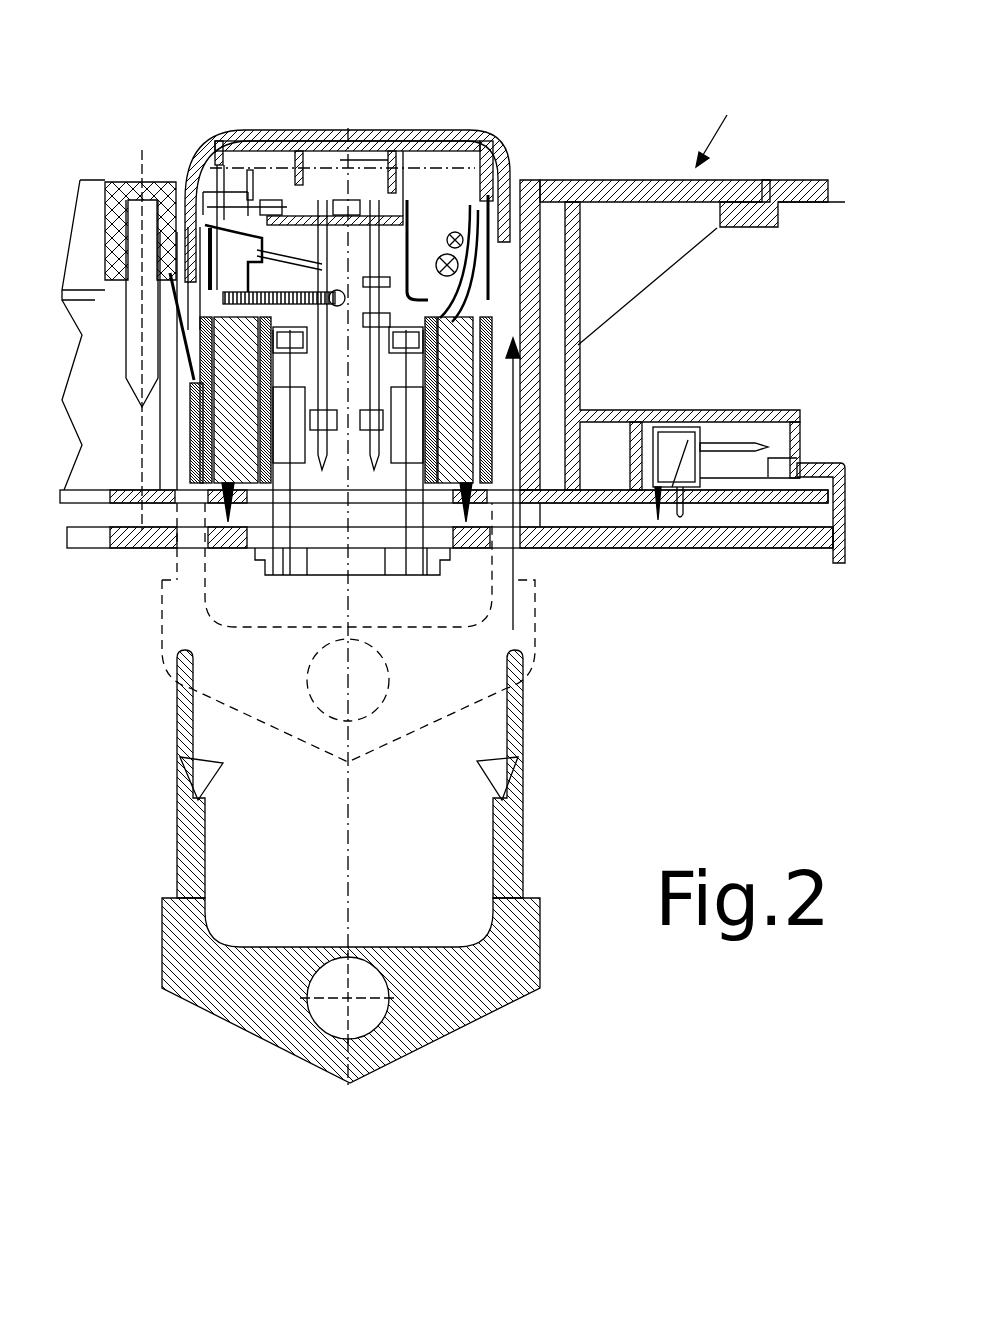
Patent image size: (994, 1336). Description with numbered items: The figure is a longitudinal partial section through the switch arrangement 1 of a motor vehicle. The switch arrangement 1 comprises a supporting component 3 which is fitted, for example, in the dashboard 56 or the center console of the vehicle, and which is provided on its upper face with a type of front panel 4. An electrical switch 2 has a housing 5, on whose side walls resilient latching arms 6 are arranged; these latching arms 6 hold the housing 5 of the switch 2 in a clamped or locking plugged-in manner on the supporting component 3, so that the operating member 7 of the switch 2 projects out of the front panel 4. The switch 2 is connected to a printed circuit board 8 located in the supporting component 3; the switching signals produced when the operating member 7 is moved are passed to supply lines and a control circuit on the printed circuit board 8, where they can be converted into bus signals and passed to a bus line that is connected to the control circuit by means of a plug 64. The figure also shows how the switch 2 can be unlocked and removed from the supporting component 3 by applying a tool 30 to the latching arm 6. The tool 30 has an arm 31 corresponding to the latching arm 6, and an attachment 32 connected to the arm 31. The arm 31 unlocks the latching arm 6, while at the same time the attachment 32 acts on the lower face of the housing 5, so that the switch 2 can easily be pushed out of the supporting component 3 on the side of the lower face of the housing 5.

The switch arrangement 1 is at (721, 121).
The electrical switch 2 is at (437, 172).
The supporting component 3 is at (540, 200).
The front panel 4 is at (625, 182).
The housing 5 is at (508, 168).
The latching arm 6 is at (534, 390).
The operating member 7 is at (200, 130).
The printed circuit board 8 is at (566, 500).
The tool 30 is at (488, 973).
The arm 31 is at (182, 713).
The attachment 32 is at (222, 763).
The dashboard 56 is at (781, 183).
The plug 64 is at (748, 450).